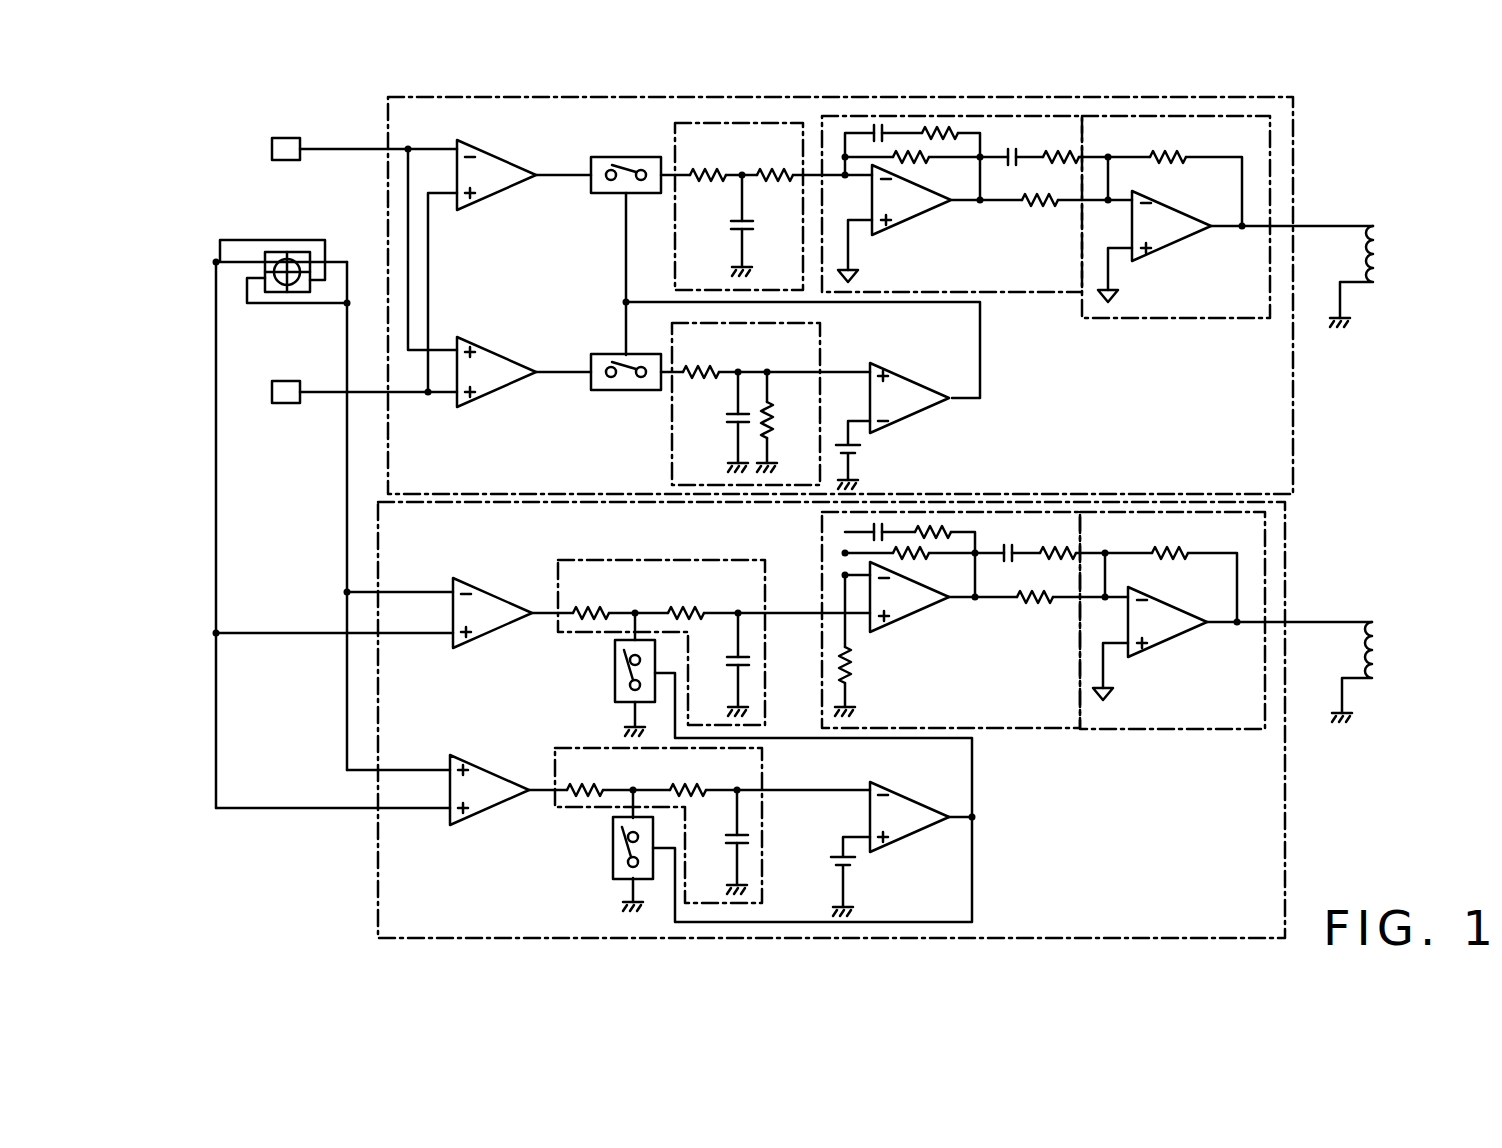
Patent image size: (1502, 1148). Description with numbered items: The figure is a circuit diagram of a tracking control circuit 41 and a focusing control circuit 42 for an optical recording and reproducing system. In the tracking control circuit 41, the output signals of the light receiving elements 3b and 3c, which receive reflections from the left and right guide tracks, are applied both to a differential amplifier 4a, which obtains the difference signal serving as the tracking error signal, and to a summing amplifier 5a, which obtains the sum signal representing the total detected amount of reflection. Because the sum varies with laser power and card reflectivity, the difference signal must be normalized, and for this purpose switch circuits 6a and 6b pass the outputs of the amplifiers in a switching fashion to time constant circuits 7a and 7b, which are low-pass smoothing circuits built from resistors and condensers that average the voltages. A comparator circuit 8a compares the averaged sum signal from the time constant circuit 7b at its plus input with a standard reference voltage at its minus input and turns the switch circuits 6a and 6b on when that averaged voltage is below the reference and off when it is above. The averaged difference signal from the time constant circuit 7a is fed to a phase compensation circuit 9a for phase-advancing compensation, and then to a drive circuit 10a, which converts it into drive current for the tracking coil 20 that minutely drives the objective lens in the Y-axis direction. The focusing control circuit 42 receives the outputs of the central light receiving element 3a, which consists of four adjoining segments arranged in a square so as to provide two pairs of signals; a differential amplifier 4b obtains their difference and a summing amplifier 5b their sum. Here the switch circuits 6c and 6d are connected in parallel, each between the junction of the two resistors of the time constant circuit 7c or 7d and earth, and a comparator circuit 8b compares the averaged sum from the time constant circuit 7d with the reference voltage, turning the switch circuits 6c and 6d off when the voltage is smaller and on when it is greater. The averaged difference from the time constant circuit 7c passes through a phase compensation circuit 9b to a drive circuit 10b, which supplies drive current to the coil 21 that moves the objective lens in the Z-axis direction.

The central light receiving element 3a is at (270, 300).
The light receiving element 3b is at (272, 146).
The light receiving element 3c is at (287, 404).
The differential amplifier 4a is at (500, 162).
The differential amplifier 4b is at (490, 597).
The summing amplifier 5a is at (492, 354).
The summing amplifier 5b is at (485, 776).
The switch circuit 6a is at (600, 158).
The switch circuit 6b is at (607, 392).
The switch circuit 6c is at (615, 676).
The switch circuit 6d is at (612, 848).
The time constant circuit 7a is at (735, 124).
The time constant circuit 7b is at (820, 337).
The time constant circuit 7c is at (668, 559).
The time constant circuit 7d is at (762, 775).
The comparator circuit 8a is at (922, 402).
The comparator circuit 8b is at (917, 823).
The phase compensation circuit 9a is at (925, 115).
The phase compensation circuit 9b is at (1008, 729).
The drive circuit 10a is at (1122, 117).
The drive circuit 10b is at (1145, 729).
The tracking coil 20 is at (1376, 232).
The tracking coil 21 is at (1374, 620).
The tracking control circuit 41 is at (1294, 169).
The focusing control circuit 42 is at (1284, 853).